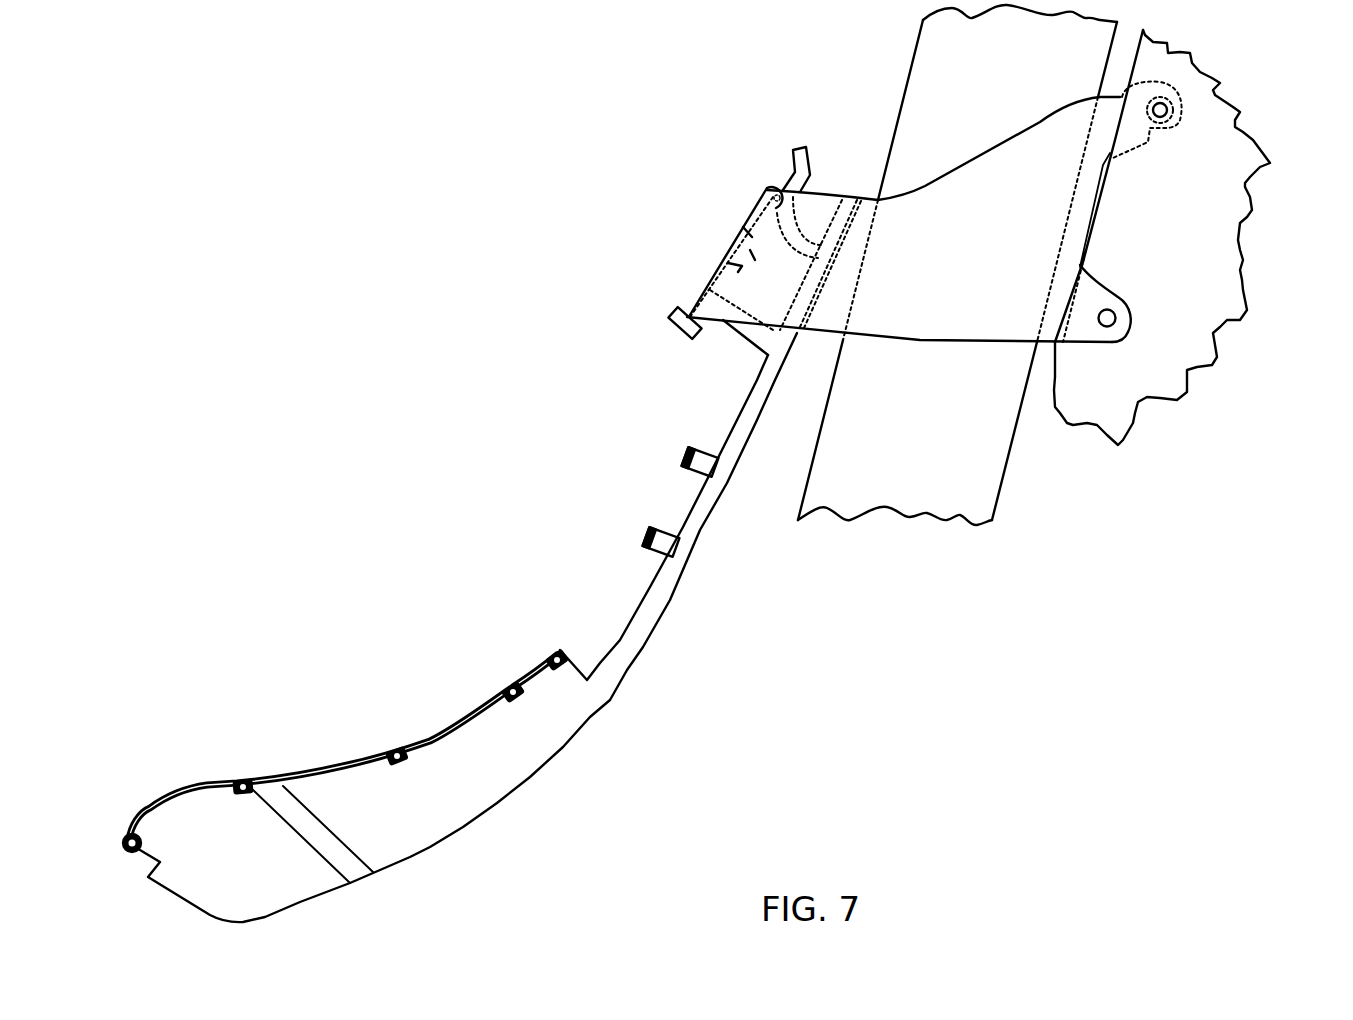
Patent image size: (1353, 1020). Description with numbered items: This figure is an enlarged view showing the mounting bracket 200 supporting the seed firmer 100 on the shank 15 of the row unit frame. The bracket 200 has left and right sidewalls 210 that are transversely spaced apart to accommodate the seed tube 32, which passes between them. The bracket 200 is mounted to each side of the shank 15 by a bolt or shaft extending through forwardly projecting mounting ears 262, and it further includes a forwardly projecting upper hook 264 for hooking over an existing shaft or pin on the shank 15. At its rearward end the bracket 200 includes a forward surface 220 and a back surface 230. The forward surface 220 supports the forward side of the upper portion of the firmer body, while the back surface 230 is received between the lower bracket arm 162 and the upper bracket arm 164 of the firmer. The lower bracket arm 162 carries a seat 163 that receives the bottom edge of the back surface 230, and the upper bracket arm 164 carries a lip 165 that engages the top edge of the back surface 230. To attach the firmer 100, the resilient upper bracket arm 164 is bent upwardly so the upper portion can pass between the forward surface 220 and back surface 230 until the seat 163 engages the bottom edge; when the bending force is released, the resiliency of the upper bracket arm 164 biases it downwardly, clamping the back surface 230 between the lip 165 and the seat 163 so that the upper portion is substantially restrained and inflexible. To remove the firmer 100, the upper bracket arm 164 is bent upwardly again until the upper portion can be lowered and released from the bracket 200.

The seed firmer 100 is at (186, 558).
The shank 15 is at (1187, 297).
The seed tube 32 is at (962, 452).
The lower bracket arm 162 is at (680, 332).
The seat 163 is at (692, 315).
The upper bracket arm 164 is at (790, 167).
The lip 165 is at (770, 205).
The mounting bracket 200 is at (865, 133).
The sidewalls 210 is at (960, 205).
The forward surface 220 is at (825, 330).
The back surface 230 is at (735, 215).
The mounting ears 262 is at (1090, 330).
The upper hook 264 is at (1185, 143).